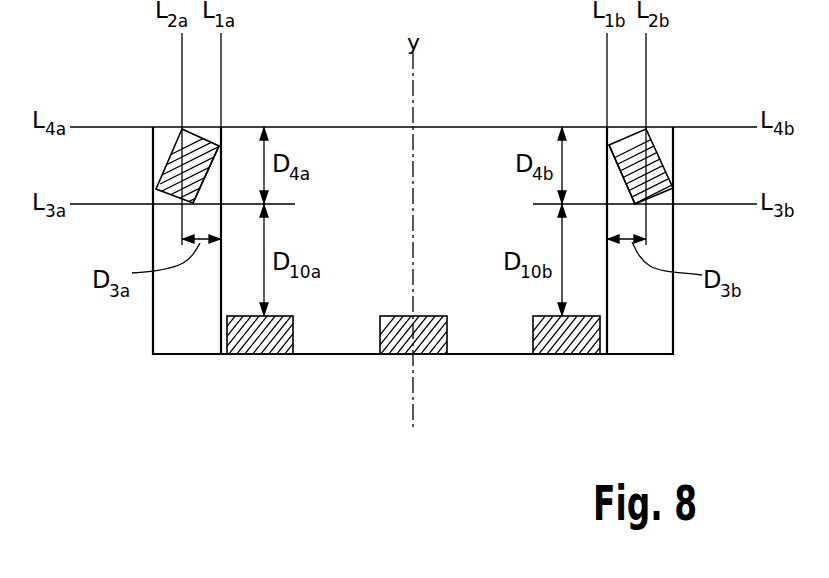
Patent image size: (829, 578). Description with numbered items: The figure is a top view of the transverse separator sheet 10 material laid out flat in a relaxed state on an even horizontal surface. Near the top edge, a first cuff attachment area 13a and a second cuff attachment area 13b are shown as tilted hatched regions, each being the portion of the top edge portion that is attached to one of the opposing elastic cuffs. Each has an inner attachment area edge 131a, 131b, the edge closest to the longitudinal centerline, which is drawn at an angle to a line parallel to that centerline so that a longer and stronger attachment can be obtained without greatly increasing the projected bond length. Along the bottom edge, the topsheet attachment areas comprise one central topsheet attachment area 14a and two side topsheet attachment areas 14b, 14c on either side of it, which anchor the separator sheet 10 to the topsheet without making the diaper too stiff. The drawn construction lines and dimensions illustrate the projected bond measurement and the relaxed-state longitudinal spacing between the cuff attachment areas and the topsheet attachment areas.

The transverse separator sheet 10 is at (452, 127).
The first cuff attachment area 13a is at (178, 145).
The inner attachment area edge 131a is at (219, 167).
The second cuff attachment area 13b is at (642, 145).
The inner attachment area edge 131b is at (608, 167).
The central topsheet attachment area 14a is at (405, 340).
The side topsheet attachment area 14b is at (253, 338).
The side topsheet attachment area 14c is at (548, 340).